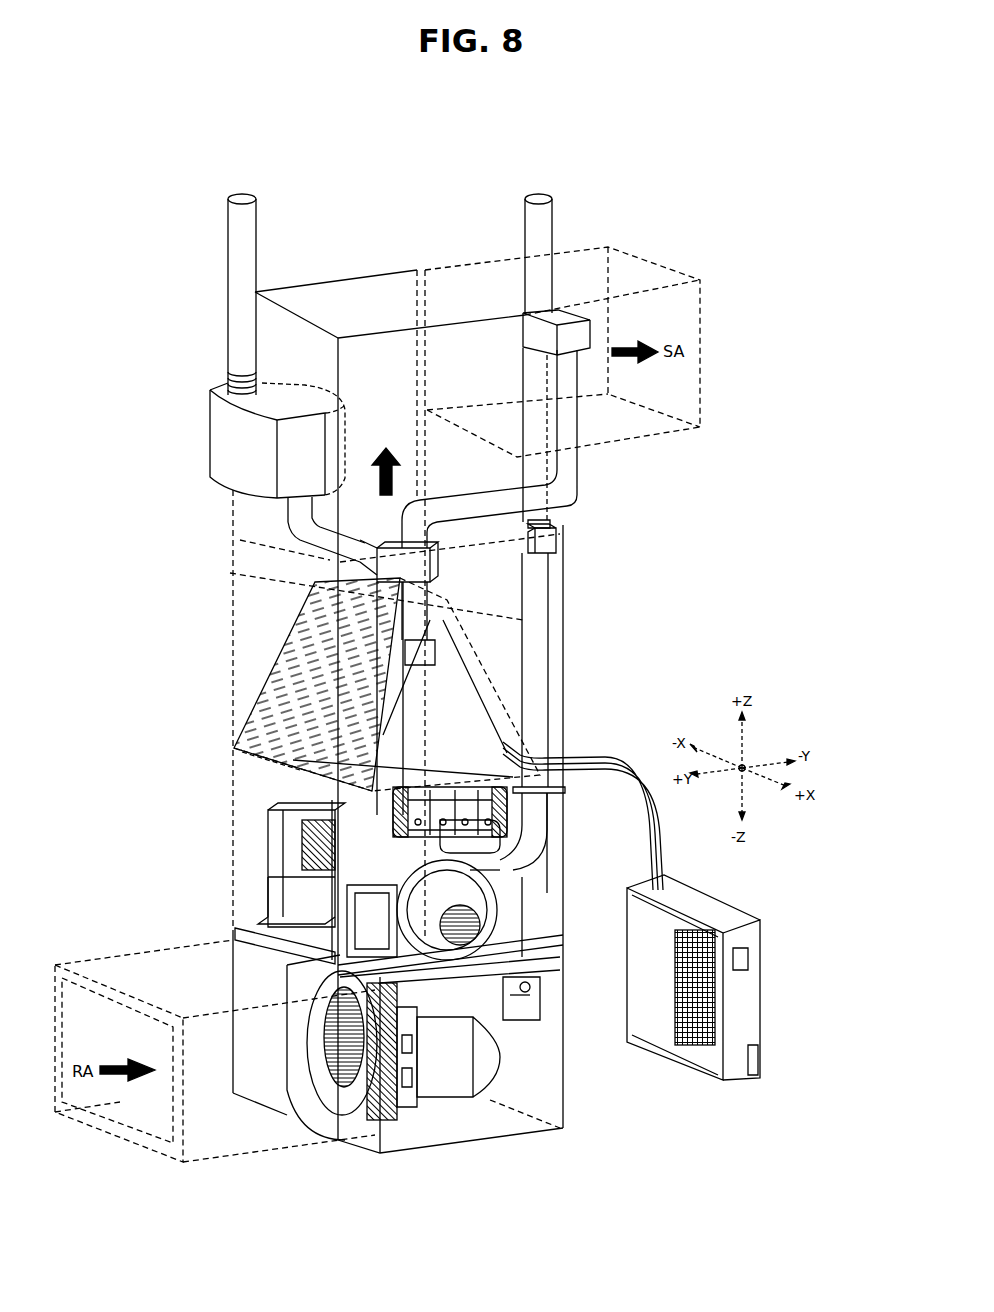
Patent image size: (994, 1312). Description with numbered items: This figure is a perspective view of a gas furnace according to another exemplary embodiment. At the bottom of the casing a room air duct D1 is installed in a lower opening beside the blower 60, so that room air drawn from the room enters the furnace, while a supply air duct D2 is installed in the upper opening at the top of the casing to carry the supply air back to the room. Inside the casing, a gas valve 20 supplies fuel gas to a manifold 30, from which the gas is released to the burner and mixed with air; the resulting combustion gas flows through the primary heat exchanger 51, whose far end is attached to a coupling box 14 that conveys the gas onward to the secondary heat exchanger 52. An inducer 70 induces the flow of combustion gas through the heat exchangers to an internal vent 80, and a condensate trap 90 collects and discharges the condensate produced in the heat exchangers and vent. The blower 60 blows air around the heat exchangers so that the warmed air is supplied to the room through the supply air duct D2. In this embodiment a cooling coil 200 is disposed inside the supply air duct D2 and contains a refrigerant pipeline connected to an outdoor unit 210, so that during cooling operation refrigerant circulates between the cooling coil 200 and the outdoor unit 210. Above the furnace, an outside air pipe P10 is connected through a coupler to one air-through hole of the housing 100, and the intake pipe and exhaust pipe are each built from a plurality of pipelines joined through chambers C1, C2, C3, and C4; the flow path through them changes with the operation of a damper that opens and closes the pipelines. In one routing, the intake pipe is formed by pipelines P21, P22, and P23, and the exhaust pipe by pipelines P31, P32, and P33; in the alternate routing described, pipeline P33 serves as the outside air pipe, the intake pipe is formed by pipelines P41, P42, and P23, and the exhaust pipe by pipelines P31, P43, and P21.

The outside air pipe pipeline P10 is at (243, 275).
The intake pipe pipeline P21 is at (300, 532).
The intake pipe pipeline P22 is at (380, 578).
The intake pipe pipeline P23 is at (242, 752).
The exhaust pipe pipeline P31 is at (533, 650).
The exhaust pipe pipeline P32 is at (530, 390).
The exhaust pipe pipeline P33 is at (532, 225).
The intake pipe pipeline P41 is at (578, 465).
The intake pipe pipeline P42 is at (425, 597).
The exhaust pipe pipeline P43 is at (540, 524).
The chamber C1 is at (430, 568).
The chamber C2 is at (440, 651).
The chamber C3 is at (558, 540).
The chamber C4 is at (567, 323).
The room air duct D1 is at (162, 947).
The supply air duct D2 is at (580, 248).
The damper housing 100 is at (195, 456).
The cooling coil 200 is at (258, 665).
The outdoor unit 210 is at (718, 912).
The coupling box 14 is at (268, 842).
The gas valve 20 is at (515, 893).
The manifold 30 is at (510, 812).
The primary heat exchanger 51 is at (575, 758).
The secondary heat exchanger 52 is at (275, 893).
The blower 60 is at (333, 1112).
The inducer 70 is at (458, 925).
The internal vent 80 is at (520, 860).
The condensate trap 90 is at (540, 1008).